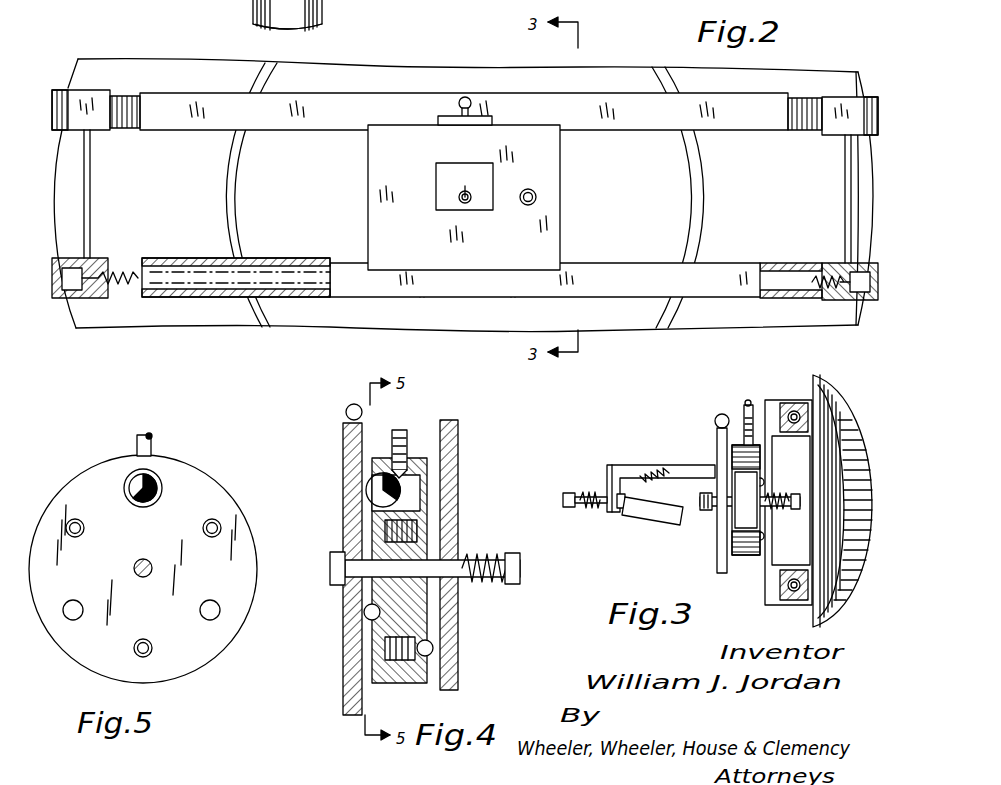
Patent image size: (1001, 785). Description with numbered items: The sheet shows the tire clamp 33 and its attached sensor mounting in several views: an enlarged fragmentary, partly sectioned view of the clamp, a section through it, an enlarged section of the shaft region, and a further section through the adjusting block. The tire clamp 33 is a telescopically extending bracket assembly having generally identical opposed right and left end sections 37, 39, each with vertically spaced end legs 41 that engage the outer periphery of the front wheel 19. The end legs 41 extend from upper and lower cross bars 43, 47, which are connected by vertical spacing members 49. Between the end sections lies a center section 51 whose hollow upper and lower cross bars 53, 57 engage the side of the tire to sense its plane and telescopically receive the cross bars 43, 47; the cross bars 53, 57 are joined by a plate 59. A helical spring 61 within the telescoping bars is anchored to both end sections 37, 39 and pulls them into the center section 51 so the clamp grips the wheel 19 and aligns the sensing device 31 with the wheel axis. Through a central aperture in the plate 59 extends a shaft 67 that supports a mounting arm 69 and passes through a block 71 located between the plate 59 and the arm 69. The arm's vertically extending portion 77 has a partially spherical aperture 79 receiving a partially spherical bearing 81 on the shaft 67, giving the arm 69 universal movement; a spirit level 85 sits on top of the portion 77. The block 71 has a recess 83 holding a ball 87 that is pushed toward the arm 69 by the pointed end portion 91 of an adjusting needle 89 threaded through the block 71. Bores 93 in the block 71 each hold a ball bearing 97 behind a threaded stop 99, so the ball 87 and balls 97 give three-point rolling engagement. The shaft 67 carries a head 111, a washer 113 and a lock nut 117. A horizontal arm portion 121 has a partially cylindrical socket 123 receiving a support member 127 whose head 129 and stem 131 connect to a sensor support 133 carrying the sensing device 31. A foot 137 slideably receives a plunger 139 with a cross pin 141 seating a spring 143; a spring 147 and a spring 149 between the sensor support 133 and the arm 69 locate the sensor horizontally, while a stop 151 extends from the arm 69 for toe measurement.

In FIG. 2, the front wheel 19 is at (664, 66).
In FIG. 4, the front wheel 19 is at (474, 560).
In FIG. 3, the front wheel 19 is at (832, 430).
In FIG. 3, the sensing device 31 is at (645, 520).
In FIG. 2, the tire clamp 33 is at (382, 92).
In FIG. 2, the right end section 37 is at (830, 95).
In FIG. 2, the left end section 39 is at (100, 86).
In FIG. 2, the end legs 41 is at (78, 112).
In FIG. 2, the upper cross bar 43 is at (132, 102).
In FIG. 3, the upper cross bar 43 is at (803, 416).
In FIG. 2, the lower cross bar 47 is at (118, 300).
In FIG. 3, the lower cross bar 47 is at (795, 578).
In FIG. 2, the vertical spacing members 49 is at (88, 212).
In FIG. 3, the center section 51 is at (560, 504).
In FIG. 2, the hollow upper cross bar 53 is at (305, 118).
In FIG. 3, the hollow upper cross bar 53 is at (794, 402).
In FIG. 2, the hollow lower cross bar 57 is at (300, 262).
In FIG. 3, the hollow lower cross bar 57 is at (768, 600).
In FIG. 2, the plate 59 is at (467, 196).
In FIG. 4, the plate 59 is at (458, 432).
In FIG. 3, the plate 59 is at (772, 486).
In FIG. 2, the helical spring 61 is at (120, 285).
In FIG. 5, the shaft 67 is at (138, 576).
In FIG. 4, the shaft 67 is at (343, 569).
In FIG. 3, the shaft 67 is at (788, 510).
In FIG. 2, the mounting arm 69 is at (382, 166).
In FIG. 3, the mounting arm 69 is at (612, 462).
In FIG. 5, the block 71 is at (92, 650).
In FIG. 4, the block 71 is at (378, 684).
In FIG. 3, the block 71 is at (750, 555).
In FIG. 4, the vertically extending portion 77 is at (343, 688).
In FIG. 3, the vertically extending portion 77 is at (720, 574).
In FIG. 4, the partially spherically shaped aperture 79 is at (350, 532).
In FIG. 4, the partially spherical bearing 81 is at (350, 590).
In FIG. 4, the recess 83 is at (412, 497).
In FIG. 2, the spirit level 85 is at (486, 126).
In FIG. 4, the spirit level 85 is at (346, 418).
In FIG. 3, the spirit level 85 is at (717, 416).
In FIG. 5, the ball 87 is at (162, 486).
In FIG. 4, the ball 87 is at (366, 488).
In FIG. 3, the ball 87 is at (732, 462).
In FIG. 2, the adjusting needle 89 is at (470, 98).
In FIG. 5, the adjusting needle 89 is at (137, 437).
In FIG. 4, the adjusting needle 89 is at (401, 432).
In FIG. 3, the adjusting needle 89 is at (748, 400).
In FIG. 4, the pointed end portion 91 is at (412, 475).
In FIG. 4, the bores 93 is at (400, 682).
In FIG. 5, the ball bearing 97 is at (78, 600).
In FIG. 4, the ball bearing 97 is at (363, 612).
In FIG. 5, the threaded stop 99 is at (84, 530).
In FIG. 4, the threaded stop 99 is at (385, 647).
In FIG. 4, the head 111 is at (506, 556).
In FIG. 4, the washer 113 is at (508, 584).
In FIG. 4, the lock nut 117 is at (348, 556).
In FIG. 3, the arm portion 121 is at (622, 464).
In FIG. 3, the partially cylindrical socket 123 is at (672, 470).
In FIG. 3, the support member 127 is at (680, 486).
In FIG. 3, the head 129 is at (650, 468).
In FIG. 3, the stem 131 is at (656, 522).
In FIG. 3, the sensor support 133 is at (672, 522).
In FIG. 2, the foot 137 is at (448, 183).
In FIG. 2, the plunger 139 is at (458, 204).
In FIG. 3, the plunger 139 is at (596, 494).
In FIG. 2, the cross pin 141 is at (466, 206).
In FIG. 3, the cross pin 141 is at (578, 506).
In FIG. 3, the spring 143 is at (618, 508).
In FIG. 3, the spring 147 is at (622, 520).
In FIG. 3, the spring 149 is at (640, 468).
In FIG. 2, the stop 151 is at (537, 197).